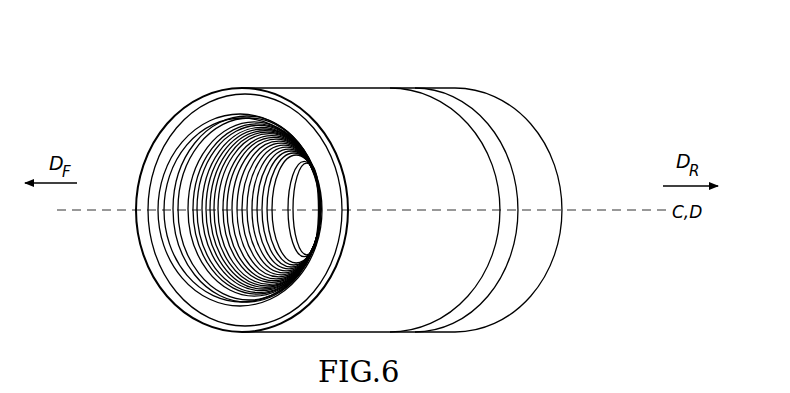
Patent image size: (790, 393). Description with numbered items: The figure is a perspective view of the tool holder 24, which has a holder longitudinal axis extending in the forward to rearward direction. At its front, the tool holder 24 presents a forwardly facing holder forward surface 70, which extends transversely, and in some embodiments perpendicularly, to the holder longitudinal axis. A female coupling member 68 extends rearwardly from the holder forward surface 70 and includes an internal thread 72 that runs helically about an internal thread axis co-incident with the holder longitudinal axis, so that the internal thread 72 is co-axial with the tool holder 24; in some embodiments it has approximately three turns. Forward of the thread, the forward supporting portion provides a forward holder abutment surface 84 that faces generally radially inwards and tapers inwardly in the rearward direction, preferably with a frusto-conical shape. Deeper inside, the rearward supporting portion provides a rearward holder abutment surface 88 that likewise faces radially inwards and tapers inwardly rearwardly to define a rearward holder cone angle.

The tool holder 24 is at (575, 58).
The female coupling member 68 is at (122, 153).
The holder forward surface 70 is at (227, 103).
The internal thread 72 is at (217, 183).
The forward holder abutment surface 84 is at (170, 233).
The rearward holder abutment surface 88 is at (288, 167).